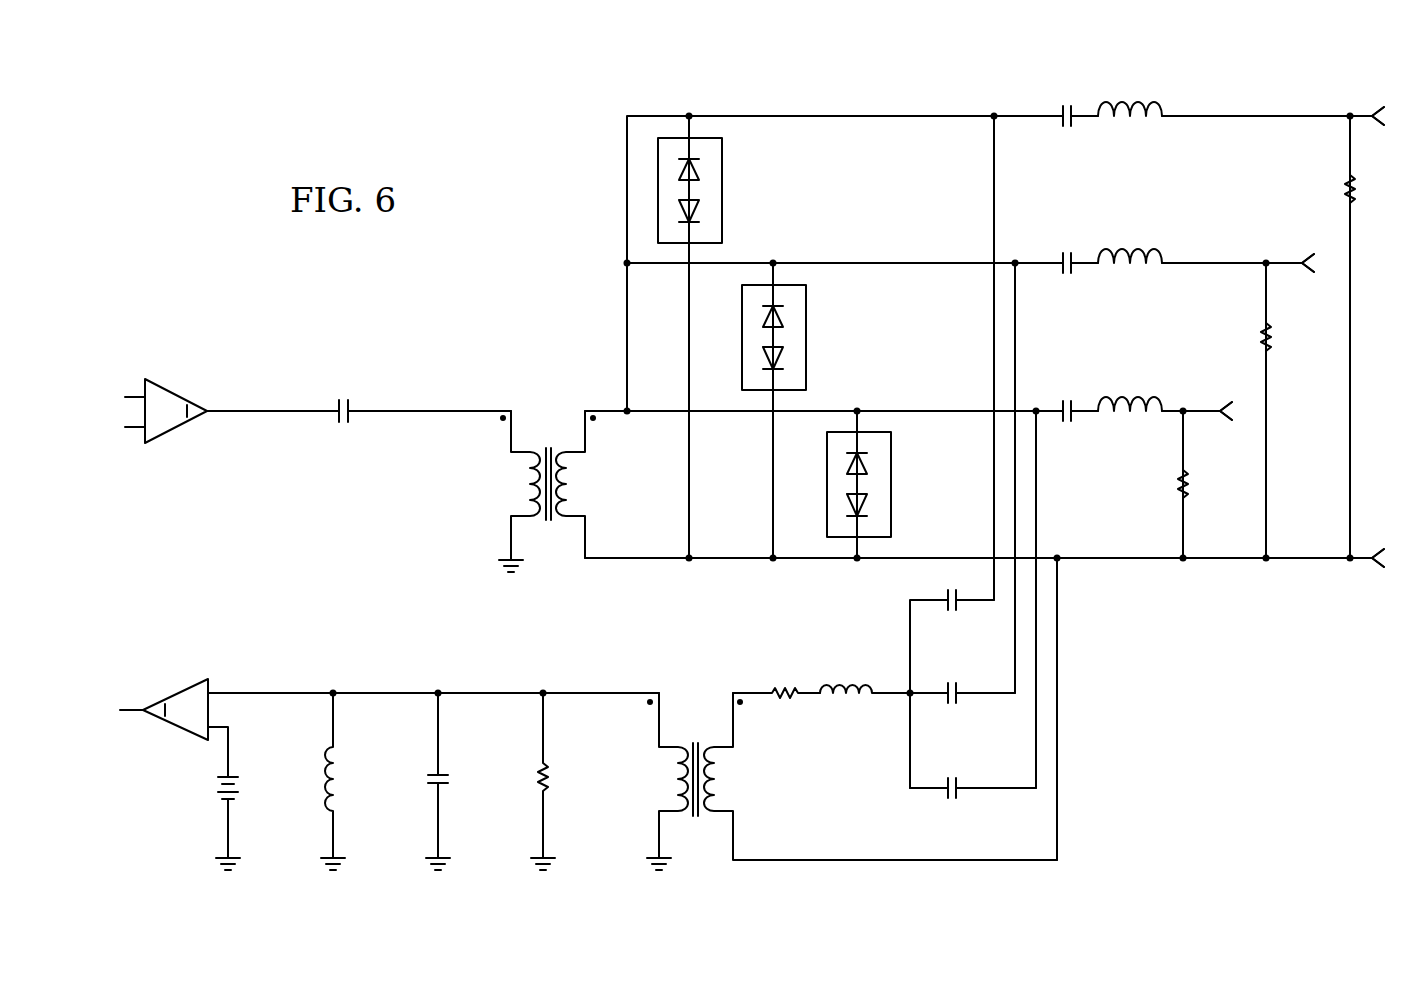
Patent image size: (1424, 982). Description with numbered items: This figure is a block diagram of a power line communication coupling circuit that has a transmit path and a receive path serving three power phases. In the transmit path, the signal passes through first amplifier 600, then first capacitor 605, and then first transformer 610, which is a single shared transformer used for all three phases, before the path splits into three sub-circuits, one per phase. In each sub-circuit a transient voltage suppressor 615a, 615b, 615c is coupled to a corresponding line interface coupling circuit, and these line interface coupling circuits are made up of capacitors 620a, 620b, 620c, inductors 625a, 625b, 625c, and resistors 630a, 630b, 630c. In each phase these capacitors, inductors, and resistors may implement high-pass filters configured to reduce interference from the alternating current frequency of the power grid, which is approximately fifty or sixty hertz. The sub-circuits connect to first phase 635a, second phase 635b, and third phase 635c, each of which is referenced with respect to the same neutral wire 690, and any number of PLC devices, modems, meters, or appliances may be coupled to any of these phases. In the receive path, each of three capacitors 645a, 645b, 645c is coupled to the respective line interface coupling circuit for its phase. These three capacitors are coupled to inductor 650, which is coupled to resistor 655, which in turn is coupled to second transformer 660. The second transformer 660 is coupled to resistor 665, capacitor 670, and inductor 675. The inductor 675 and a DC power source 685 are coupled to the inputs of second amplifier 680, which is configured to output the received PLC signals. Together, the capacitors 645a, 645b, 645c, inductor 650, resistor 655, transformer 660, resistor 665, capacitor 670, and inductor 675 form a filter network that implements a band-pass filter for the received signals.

The first amplifier 600 is at (190, 394).
The first capacitor 605 is at (343, 399).
The first transformer 610 is at (548, 447).
The transient voltage suppressor 615a is at (723, 190).
The transient voltage suppressor 615b is at (807, 337).
The transient voltage suppressor 615c is at (892, 484).
The capacitor 620a is at (1067, 105).
The capacitor 620b is at (1067, 252).
The capacitor 620c is at (1067, 400).
The inductor 625a is at (1138, 102).
The inductor 625b is at (1138, 249).
The inductor 625c is at (1138, 397).
The resistor 630a is at (1347, 190).
The resistor 630b is at (1263, 337).
The resistor 630c is at (1180, 483).
The first phase 635a is at (1375, 112).
The second phase 635b is at (1304, 270).
The third phase 635c is at (1222, 418).
The capacitor 645a is at (952, 612).
The capacitor 645b is at (952, 705).
The capacitor 645c is at (952, 800).
The inductor 650 is at (843, 700).
The resistor 655 is at (781, 700).
The second transformer 660 is at (695, 818).
The resistor 665 is at (540, 780).
The capacitor 670 is at (428, 780).
The inductor 675 is at (321, 806).
The second amplifier 680 is at (178, 690).
The DC power source 685 is at (213, 793).
The neutral wire 690 is at (1376, 563).